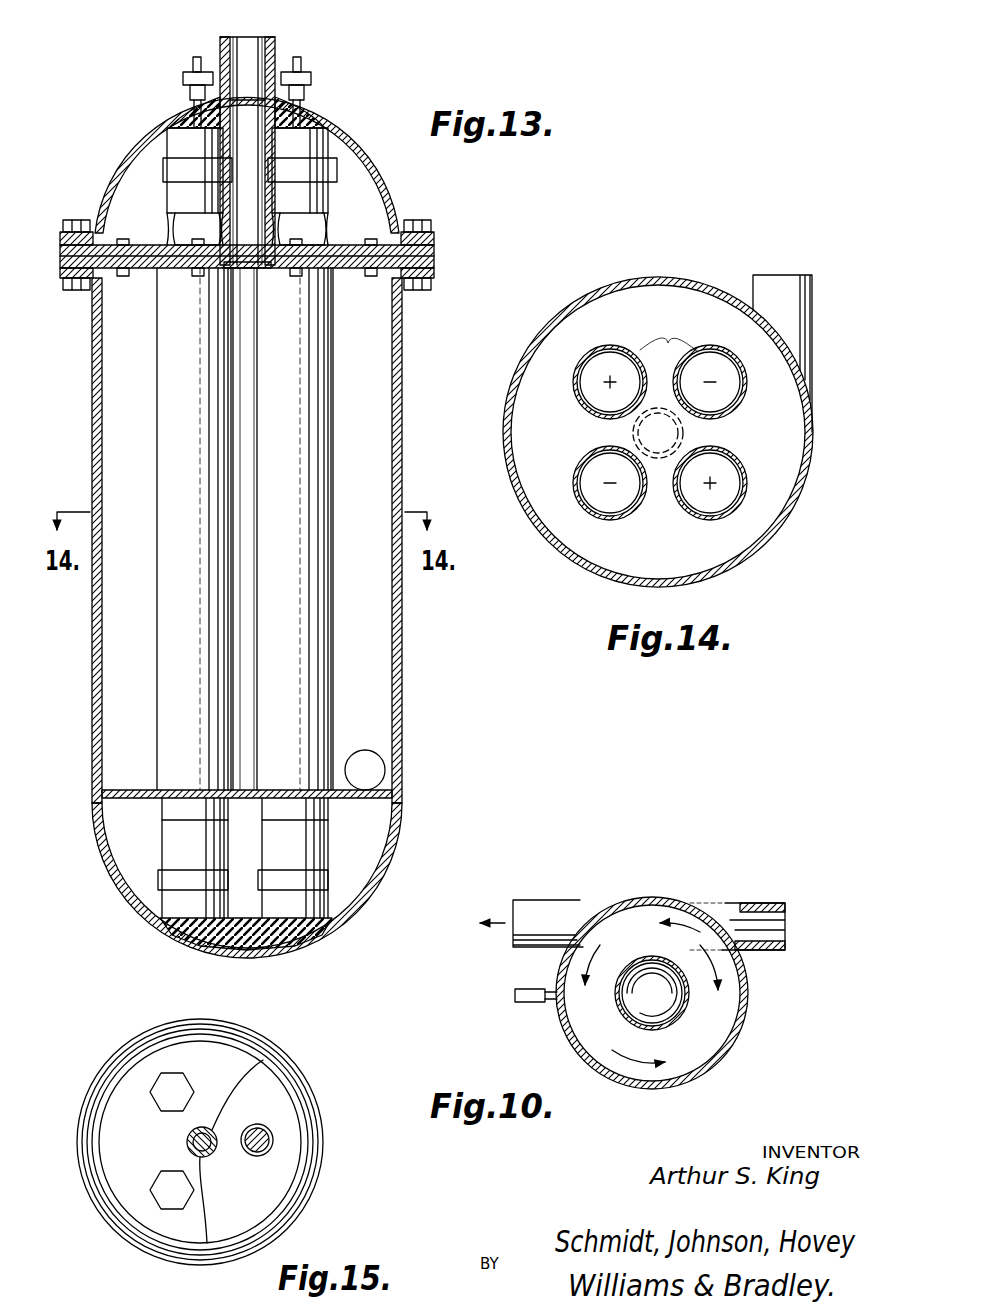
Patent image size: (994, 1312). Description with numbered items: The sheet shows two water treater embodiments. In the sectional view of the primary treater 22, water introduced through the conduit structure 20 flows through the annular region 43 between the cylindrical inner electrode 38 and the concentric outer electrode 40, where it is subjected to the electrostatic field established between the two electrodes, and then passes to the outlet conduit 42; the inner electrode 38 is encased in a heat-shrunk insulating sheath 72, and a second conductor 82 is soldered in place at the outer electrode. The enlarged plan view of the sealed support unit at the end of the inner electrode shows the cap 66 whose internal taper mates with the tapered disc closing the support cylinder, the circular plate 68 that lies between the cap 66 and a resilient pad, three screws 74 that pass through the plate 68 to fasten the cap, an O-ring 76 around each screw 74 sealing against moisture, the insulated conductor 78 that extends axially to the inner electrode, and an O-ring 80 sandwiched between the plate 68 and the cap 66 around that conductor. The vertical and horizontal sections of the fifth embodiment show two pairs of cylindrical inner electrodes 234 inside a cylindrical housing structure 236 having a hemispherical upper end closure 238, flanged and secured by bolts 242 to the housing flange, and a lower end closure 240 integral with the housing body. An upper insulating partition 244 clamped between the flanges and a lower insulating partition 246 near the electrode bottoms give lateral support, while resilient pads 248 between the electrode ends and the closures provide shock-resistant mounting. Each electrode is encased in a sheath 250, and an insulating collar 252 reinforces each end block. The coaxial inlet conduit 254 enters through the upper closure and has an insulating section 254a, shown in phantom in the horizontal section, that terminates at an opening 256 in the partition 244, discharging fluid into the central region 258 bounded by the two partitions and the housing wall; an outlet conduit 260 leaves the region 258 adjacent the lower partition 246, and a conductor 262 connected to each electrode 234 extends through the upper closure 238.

In FIG. 10, the conduit structure 20 is at (776, 908).
In FIG. 10, the primary treater 22 is at (643, 895).
In FIG. 10, the inner electrode 38 is at (672, 1035).
In FIG. 10, the outer electrode 40 is at (752, 1000).
In FIG. 10, the outlet conduit 42 is at (543, 900).
In FIG. 10, the annular region 43 is at (695, 1066).
In FIG. 10, the sheath 72 is at (688, 972).
In FIG. 10, the second conductor 82 is at (522, 1002).
In FIG. 15, the cap 66 is at (290, 1078).
In FIG. 15, the circular plate 68 is at (110, 1165).
In FIG. 15, the screw 74 is at (170, 1177).
In FIG. 15, the O-ring 76 is at (266, 1155).
In FIG. 15, the insulated conductor 78 is at (209, 1152).
In FIG. 15, the O-ring 80 is at (212, 1131).
In FIG. 13, the inner electrodes 234 is at (156, 393).
In FIG. 14, the inner electrodes 234 is at (750, 390).
In FIG. 13, the housing structure 236 is at (404, 320).
In FIG. 14, the housing structure 236 is at (646, 280).
In FIG. 13, the upper end closure 238 is at (344, 128).
In FIG. 13, the lower end closure 240 is at (346, 922).
In FIG. 13, the bolts 242 is at (416, 232).
In FIG. 13, the upper insulating partition 244 is at (340, 246).
In FIG. 13, the lower insulating partition 246 is at (393, 796).
In FIG. 13, the resilient pads 248 is at (294, 112).
In FIG. 14, the sheath 250 is at (669, 328).
In FIG. 13, the collar 252 is at (158, 876).
In FIG. 13, the inlet conduit 254 is at (262, 38).
In FIG. 13, the conduit section 254a is at (190, 225).
In FIG. 14, the conduit section 254a is at (633, 433).
In FIG. 13, the opening 256 is at (255, 270).
In FIG. 13, the region 258 is at (242, 546).
In FIG. 13, the outlet conduit 260 is at (365, 750).
In FIG. 14, the outlet conduit 260 is at (812, 284).
In FIG. 13, the conductor 262 is at (197, 56).